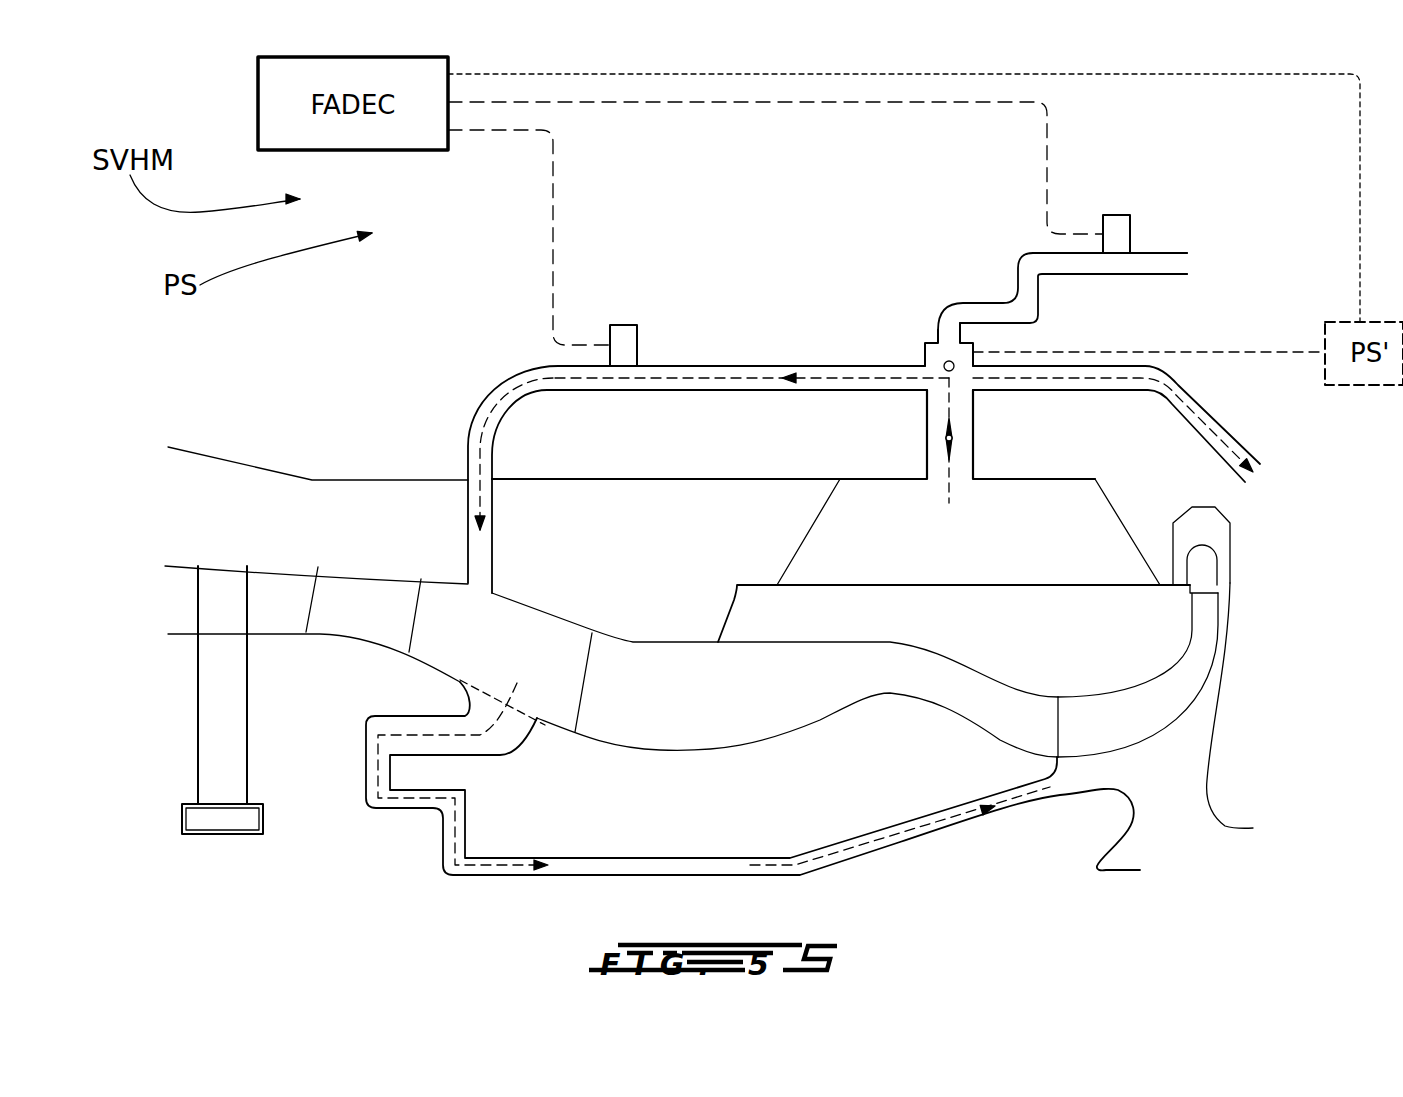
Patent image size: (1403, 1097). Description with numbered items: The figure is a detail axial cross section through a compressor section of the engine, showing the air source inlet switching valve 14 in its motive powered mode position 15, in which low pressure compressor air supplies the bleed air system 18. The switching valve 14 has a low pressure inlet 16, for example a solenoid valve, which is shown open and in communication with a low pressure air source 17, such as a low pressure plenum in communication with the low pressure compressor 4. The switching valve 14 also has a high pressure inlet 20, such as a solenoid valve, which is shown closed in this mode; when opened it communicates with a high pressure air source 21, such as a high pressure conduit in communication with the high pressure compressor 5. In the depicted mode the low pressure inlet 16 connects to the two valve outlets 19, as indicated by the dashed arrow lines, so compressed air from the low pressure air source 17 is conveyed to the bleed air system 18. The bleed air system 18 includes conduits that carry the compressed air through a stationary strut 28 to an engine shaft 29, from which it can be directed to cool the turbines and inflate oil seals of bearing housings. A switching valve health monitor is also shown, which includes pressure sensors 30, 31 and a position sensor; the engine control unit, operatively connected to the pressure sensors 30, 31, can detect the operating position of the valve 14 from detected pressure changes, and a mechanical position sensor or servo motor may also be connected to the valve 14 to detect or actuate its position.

The low pressure compressor 4 is at (217, 597).
The high pressure compressor 5 is at (1203, 590).
The air source inlet switching valve 14 is at (970, 338).
The motive powered mode position 15 is at (1010, 230).
The low pressure inlet 16 is at (925, 437).
The low pressure air source 17 is at (1015, 552).
The bleed air system 18 is at (493, 388).
The valve outlets 19 is at (768, 366).
The high pressure inlet 20 is at (935, 357).
The high pressure air source 21 is at (1183, 267).
The stationary strut 28 is at (445, 599).
The engine shaft 29 is at (578, 870).
The pressure sensor 30 is at (623, 342).
The pressure sensor 31 is at (1133, 223).